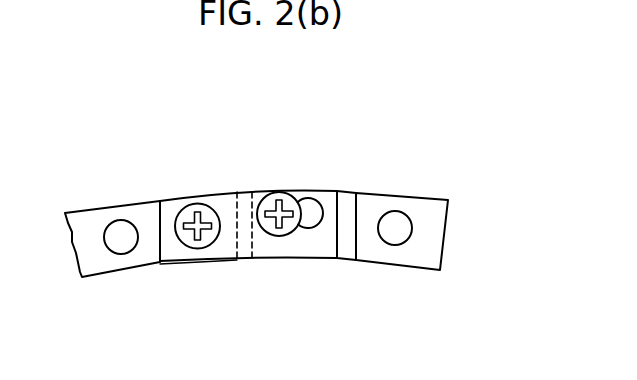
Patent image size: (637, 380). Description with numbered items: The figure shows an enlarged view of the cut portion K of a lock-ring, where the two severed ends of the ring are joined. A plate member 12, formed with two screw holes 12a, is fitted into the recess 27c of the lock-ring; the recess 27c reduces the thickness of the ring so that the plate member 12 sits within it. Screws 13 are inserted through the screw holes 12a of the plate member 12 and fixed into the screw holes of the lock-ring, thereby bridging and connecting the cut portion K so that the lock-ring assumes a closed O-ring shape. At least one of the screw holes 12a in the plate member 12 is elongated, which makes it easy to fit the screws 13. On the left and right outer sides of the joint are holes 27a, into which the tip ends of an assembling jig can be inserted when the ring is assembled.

The plate member 12 is at (329, 193).
The screw hole 12a is at (308, 197).
The screw 13 is at (271, 193).
The cut portion K is at (243, 262).
The recess 27c is at (345, 260).
The hole 27a is at (120, 227).